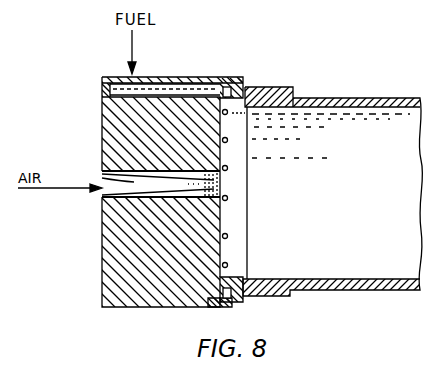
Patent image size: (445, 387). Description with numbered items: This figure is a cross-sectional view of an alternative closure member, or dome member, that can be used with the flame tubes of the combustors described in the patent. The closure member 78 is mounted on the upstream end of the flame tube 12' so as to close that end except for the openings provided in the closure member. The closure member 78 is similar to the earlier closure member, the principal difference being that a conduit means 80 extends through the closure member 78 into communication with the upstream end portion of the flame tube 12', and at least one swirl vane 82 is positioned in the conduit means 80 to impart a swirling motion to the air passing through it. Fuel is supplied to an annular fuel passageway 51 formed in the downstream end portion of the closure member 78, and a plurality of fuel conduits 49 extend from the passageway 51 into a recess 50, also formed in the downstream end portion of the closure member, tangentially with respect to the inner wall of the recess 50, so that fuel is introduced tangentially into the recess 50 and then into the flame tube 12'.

The closure member 78 is at (108, 286).
The swirl vane 82 is at (101, 175).
The conduit means 80 is at (102, 196).
The annular fuel passageway 51 is at (231, 80).
The flame tube 12' is at (327, 188).
The recess 50 is at (237, 218).
The fuel conduits 49 is at (228, 196).